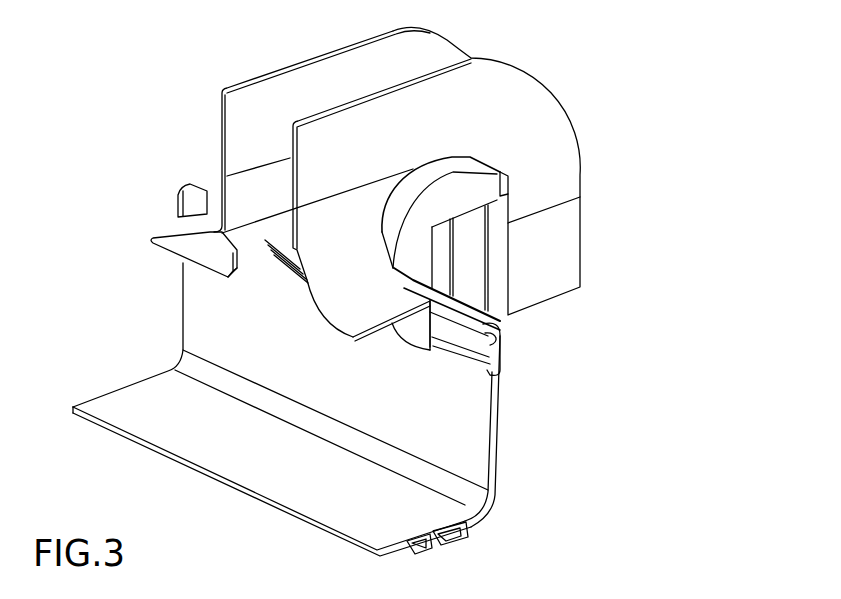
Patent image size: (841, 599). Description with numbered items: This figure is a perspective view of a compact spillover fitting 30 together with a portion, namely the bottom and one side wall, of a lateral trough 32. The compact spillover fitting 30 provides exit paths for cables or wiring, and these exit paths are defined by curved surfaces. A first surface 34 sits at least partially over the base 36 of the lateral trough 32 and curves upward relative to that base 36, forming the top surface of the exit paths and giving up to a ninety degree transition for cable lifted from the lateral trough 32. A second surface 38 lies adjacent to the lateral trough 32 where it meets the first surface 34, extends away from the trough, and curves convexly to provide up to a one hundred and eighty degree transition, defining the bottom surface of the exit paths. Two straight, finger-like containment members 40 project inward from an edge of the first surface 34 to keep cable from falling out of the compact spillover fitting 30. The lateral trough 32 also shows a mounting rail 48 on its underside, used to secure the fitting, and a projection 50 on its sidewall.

The compact spillover fitting 30 is at (354, 268).
The lateral trough 32 is at (331, 431).
The first surface 34 is at (252, 234).
The base 36 is at (340, 483).
The second surface 38 is at (280, 221).
The containment members 40 is at (203, 255).
The mounting rail 48 is at (460, 543).
The projection 50 is at (497, 387).